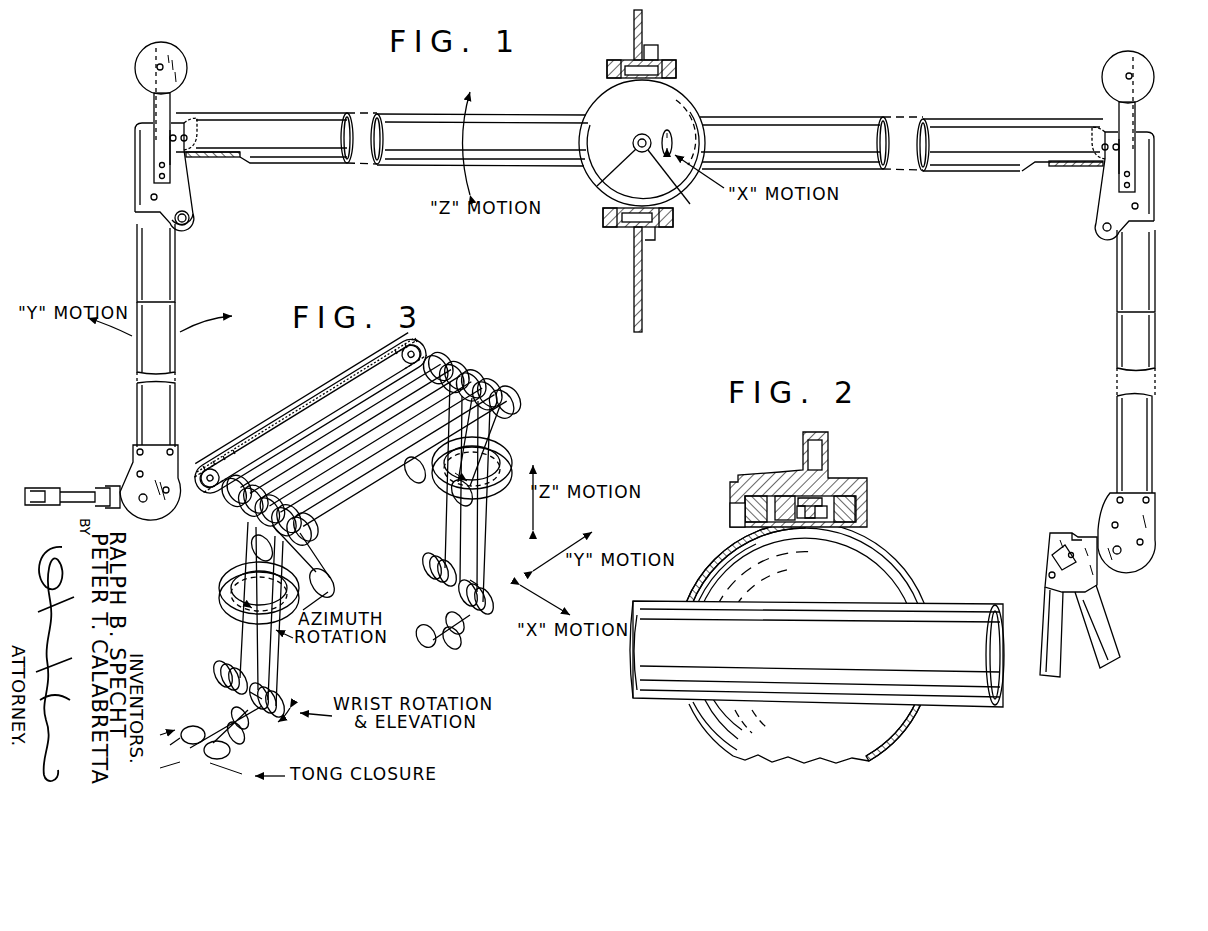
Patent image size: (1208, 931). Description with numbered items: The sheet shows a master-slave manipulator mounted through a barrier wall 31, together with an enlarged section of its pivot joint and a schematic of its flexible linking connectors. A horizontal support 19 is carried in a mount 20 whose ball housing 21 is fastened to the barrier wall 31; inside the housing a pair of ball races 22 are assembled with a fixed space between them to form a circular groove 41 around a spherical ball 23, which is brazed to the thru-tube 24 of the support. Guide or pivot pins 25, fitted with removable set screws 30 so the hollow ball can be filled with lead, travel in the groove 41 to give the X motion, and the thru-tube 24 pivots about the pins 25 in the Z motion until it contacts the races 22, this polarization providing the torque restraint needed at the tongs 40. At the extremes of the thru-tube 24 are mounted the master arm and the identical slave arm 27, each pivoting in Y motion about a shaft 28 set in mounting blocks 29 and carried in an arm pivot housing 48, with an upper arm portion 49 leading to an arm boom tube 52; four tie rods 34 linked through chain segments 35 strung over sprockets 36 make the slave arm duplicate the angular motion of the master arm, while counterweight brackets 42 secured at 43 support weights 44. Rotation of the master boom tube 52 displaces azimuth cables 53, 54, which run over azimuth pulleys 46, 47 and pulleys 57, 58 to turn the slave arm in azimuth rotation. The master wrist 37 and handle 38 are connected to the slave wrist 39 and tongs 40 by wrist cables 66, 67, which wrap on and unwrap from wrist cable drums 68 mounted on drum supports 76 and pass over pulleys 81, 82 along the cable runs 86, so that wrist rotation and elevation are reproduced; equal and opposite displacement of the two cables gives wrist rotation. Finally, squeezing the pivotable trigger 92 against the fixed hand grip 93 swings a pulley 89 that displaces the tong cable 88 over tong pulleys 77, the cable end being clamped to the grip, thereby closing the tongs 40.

In FIG. 1, the horizontal support 19 is at (371, 183).
In FIG. 1, the mount 20 is at (682, 228).
In FIG. 1, the ball housing 21 is at (630, 62).
In FIG. 2, the ball housing 21 is at (838, 480).
In FIG. 1, the ball races 22 is at (606, 75).
In FIG. 2, the ball races 22 is at (740, 513).
In FIG. 1, the spherical ball 23 is at (697, 108).
In FIG. 2, the spherical ball 23 is at (878, 548).
In FIG. 1, the thru-tube 24 is at (770, 128).
In FIG. 2, the thru-tube 24 is at (955, 615).
In FIG. 1, the guide or pivot pins 25 is at (596, 187).
In FIG. 2, the guide or pivot pins 25 is at (775, 490).
In FIG. 1, the slave arm 27 is at (205, 305).
In FIG. 1, the shaft 28 is at (150, 140).
In FIG. 1, the mounting blocks 29 is at (189, 128).
In FIG. 1, the set screws 30 is at (679, 183).
In FIG. 2, the set screws 30 is at (808, 495).
In FIG. 1, the barrier wall 31 is at (646, 20).
In FIG. 1, the tie rods 34 is at (244, 160).
In FIG. 3, the tie rods 34 is at (302, 425).
In FIG. 1, the chain segments 35 is at (200, 158).
In FIG. 3, the chain segments 35 is at (400, 350).
In FIG. 3, the sprockets 36 is at (310, 416).
In FIG. 1, the master wrist 37 is at (1125, 517).
In FIG. 1, the handle 38 is at (1053, 540).
In FIG. 1, the slave wrist 39 is at (147, 470).
In FIG. 1, the tongs 40 is at (85, 490).
In FIG. 1, the circular groove 41 is at (658, 58).
In FIG. 1, the counterweight brackets 42 is at (154, 104).
In FIG. 1, the bracket securing point 43 is at (159, 167).
In FIG. 1, the weights 44 is at (182, 63).
In FIG. 1, the azimuth pulley 46 is at (190, 220).
In FIG. 3, the azimuth pulley 46 is at (338, 508).
In FIG. 1, the azimuth pulley 47 is at (182, 218).
In FIG. 3, the azimuth pulley 47 is at (391, 538).
In FIG. 1, the arm pivot housing 48 is at (135, 193).
In FIG. 1, the upper arm tube 49 is at (150, 250).
In FIG. 1, the arm boom tube 52 is at (150, 362).
In FIG. 3, the azimuth cable 53 is at (327, 425).
In FIG. 3, the azimuth cable 54 is at (373, 444).
In FIG. 3, the pulley 57 is at (337, 429).
In FIG. 3, the pulley 58 is at (404, 466).
In FIG. 3, the wrist cable 66 is at (345, 418).
In FIG. 3, the wrist cable 67 is at (304, 401).
In FIG. 3, the wrist cable drum 68 is at (222, 676).
In FIG. 3, the pulley shaft 76 is at (255, 698).
In FIG. 3, the tong pulley 77 is at (245, 730).
In FIG. 3, the pulley 81 is at (371, 448).
In FIG. 3, the pulley 82 is at (371, 447).
In FIG. 3, the tape run 86 is at (370, 544).
In FIG. 3, the tong cable 88 is at (305, 407).
In FIG. 3, the pulley 89 is at (425, 648).
In FIG. 1, the trigger 92 is at (1052, 672).
In FIG. 1, the fixed hand grip 93 is at (1100, 633).